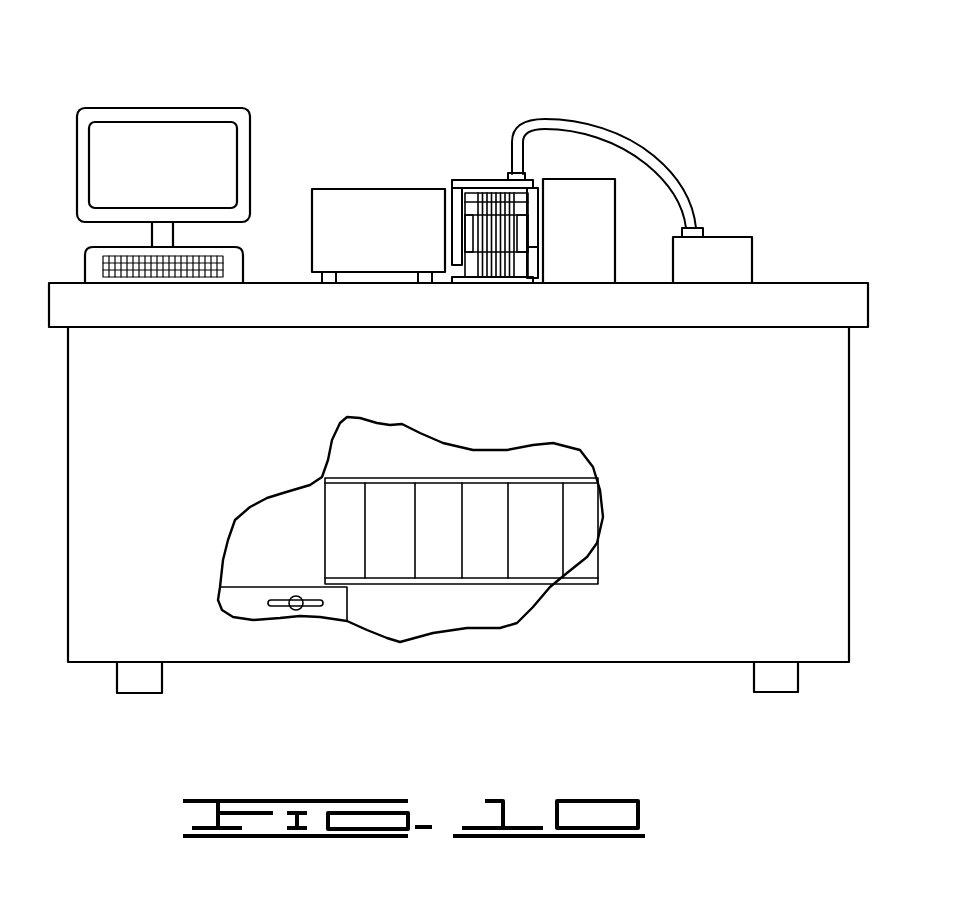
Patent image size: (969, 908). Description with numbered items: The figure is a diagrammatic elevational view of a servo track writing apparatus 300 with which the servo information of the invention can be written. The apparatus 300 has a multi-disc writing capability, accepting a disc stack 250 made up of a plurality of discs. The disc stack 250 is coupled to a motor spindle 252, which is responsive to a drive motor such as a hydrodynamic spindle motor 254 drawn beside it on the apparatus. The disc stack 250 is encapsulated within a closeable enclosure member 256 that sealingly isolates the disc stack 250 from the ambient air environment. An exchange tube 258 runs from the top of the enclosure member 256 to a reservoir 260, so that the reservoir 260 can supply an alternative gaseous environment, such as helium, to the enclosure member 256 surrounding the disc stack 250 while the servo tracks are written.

The servo track writing apparatus 300 is at (352, 83).
The disc stack 250 is at (510, 278).
The motor spindle 252 is at (462, 232).
The hydrodynamic spindle motor 254 is at (352, 188).
The closeable enclosure member 256 is at (483, 182).
The exchange tube 258 is at (628, 145).
The reservoir 260 is at (752, 254).